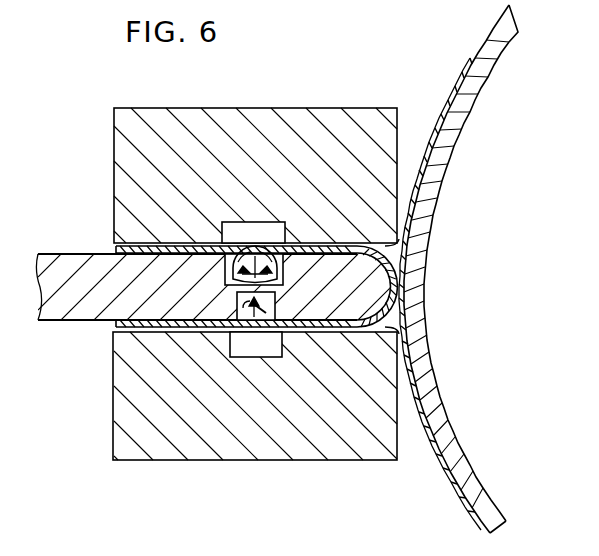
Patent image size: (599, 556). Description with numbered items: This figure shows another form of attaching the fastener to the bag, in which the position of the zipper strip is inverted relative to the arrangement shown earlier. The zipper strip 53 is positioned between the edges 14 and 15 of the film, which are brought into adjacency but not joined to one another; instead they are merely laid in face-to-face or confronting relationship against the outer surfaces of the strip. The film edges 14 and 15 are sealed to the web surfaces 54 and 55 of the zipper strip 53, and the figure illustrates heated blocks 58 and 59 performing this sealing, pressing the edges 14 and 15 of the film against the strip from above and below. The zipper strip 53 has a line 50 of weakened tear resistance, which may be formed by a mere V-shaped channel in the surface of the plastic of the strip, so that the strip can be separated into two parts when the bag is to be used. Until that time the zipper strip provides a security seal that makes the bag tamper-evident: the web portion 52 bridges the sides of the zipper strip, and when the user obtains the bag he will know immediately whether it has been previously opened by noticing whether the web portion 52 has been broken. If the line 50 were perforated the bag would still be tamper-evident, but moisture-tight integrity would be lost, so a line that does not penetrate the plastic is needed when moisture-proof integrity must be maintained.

The film edge 14 is at (178, 246).
The film edge 15 is at (200, 333).
The line of weakened tear resistance 50 is at (63, 303).
The web portion 52 is at (378, 244).
The zipper strip 53 is at (362, 286).
The web surface 54 is at (205, 254).
The web surface 55 is at (155, 321).
The heated block 58 is at (138, 133).
The heated block 59 is at (132, 400).